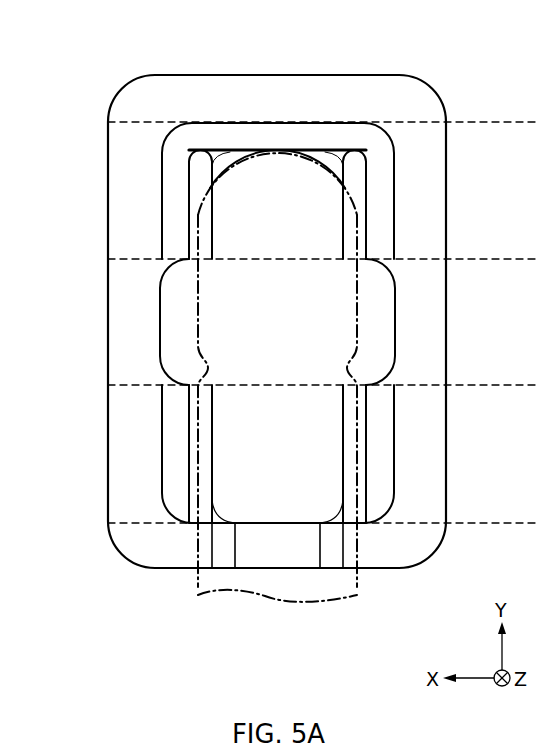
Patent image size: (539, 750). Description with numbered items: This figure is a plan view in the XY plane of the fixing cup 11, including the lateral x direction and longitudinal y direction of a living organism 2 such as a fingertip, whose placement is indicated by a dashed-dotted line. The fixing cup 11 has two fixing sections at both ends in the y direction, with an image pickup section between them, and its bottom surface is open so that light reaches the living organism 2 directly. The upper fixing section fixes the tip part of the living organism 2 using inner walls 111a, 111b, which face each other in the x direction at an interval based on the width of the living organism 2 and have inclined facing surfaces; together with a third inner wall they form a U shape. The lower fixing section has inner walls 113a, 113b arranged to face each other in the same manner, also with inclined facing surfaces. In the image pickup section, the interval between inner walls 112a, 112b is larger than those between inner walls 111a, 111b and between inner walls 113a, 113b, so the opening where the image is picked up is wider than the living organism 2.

The living organism 2 is at (198, 336).
The fixing cup 11 is at (333, 85).
The inner wall 111a is at (372, 210).
The inner wall 111b is at (184, 212).
The inner wall 112a is at (390, 310).
The inner wall 112b is at (165, 310).
The inner wall 113a is at (372, 456).
The inner wall 113b is at (184, 457).